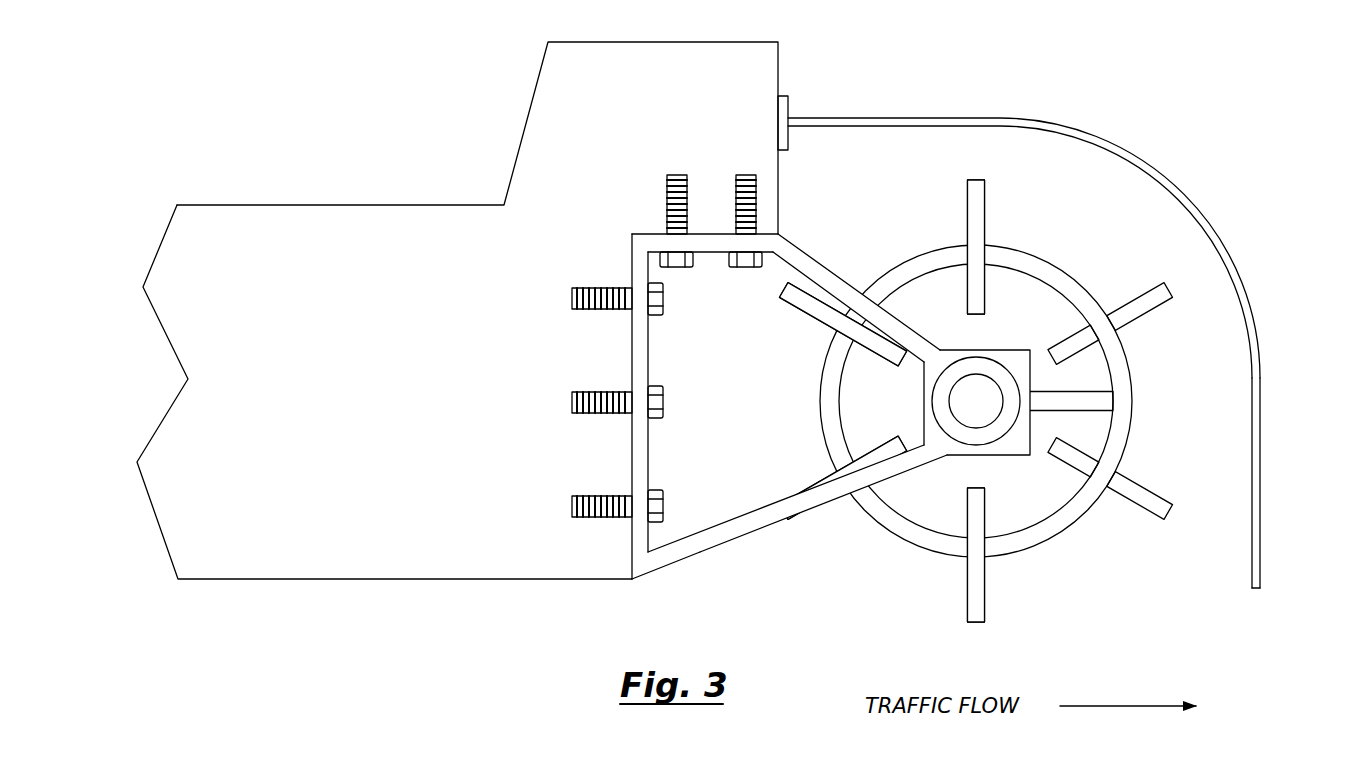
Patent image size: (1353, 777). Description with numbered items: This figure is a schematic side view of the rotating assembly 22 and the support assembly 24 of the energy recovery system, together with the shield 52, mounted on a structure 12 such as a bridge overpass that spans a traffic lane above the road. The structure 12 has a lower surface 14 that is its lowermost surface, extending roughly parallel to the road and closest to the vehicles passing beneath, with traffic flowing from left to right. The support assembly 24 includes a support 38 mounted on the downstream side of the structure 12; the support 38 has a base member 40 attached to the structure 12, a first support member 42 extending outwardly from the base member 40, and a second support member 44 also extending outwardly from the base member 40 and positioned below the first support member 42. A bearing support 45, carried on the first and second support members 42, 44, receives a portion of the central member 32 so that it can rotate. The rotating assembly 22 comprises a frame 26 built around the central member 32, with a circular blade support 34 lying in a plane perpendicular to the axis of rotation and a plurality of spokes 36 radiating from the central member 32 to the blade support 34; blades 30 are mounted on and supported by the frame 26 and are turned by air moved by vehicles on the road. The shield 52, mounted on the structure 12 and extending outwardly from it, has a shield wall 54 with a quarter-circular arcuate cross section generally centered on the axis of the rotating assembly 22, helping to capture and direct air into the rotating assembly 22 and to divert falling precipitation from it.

The structure 12 is at (467, 148).
The lower surface 14 is at (500, 575).
The rotating assembly 22 is at (1004, 408).
The support assembly 24 is at (804, 410).
The frame 26 is at (1025, 422).
The blade 30 is at (981, 597).
The central member 32 is at (975, 398).
The blade support 34 is at (1070, 515).
The spokes 36 is at (925, 500).
The support 38 is at (657, 556).
The base member 40 is at (637, 360).
The first support member 42 is at (797, 257).
The second support member 44 is at (770, 512).
The bearing support 45 is at (1003, 357).
The shield 52 is at (1173, 188).
The shield wall 54 is at (1258, 383).